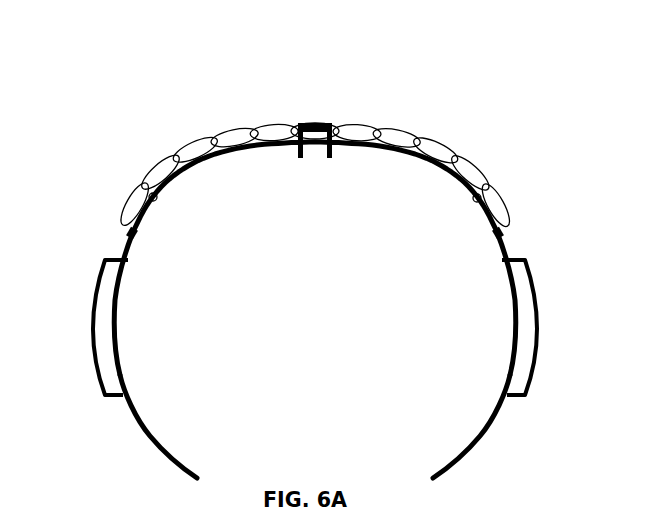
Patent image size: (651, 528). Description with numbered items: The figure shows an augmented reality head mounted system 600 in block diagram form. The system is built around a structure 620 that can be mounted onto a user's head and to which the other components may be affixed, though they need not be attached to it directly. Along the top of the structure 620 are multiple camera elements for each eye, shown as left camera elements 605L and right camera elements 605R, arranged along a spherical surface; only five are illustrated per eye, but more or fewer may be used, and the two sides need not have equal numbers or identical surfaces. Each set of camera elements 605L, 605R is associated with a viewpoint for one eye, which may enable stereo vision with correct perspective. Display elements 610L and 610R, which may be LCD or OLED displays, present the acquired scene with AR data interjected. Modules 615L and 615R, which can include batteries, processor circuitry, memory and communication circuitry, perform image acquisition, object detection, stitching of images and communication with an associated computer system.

The augmented reality head mounted system 600 is at (315, 196).
The left camera elements 605L is at (209, 166).
The right camera elements 605R is at (445, 167).
The left display element 610L is at (187, 219).
The right display element 610R is at (438, 220).
The left module 615L is at (84, 297).
The right module 615R is at (547, 297).
The structure 620 is at (315, 426).